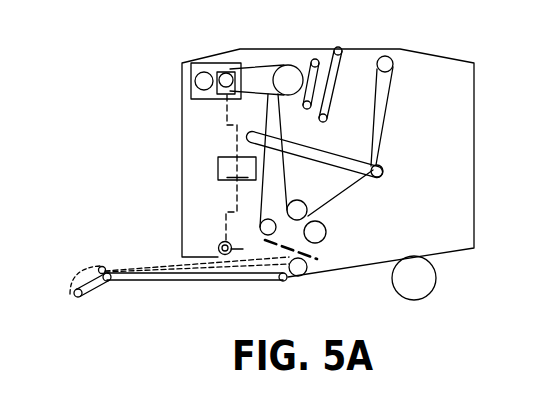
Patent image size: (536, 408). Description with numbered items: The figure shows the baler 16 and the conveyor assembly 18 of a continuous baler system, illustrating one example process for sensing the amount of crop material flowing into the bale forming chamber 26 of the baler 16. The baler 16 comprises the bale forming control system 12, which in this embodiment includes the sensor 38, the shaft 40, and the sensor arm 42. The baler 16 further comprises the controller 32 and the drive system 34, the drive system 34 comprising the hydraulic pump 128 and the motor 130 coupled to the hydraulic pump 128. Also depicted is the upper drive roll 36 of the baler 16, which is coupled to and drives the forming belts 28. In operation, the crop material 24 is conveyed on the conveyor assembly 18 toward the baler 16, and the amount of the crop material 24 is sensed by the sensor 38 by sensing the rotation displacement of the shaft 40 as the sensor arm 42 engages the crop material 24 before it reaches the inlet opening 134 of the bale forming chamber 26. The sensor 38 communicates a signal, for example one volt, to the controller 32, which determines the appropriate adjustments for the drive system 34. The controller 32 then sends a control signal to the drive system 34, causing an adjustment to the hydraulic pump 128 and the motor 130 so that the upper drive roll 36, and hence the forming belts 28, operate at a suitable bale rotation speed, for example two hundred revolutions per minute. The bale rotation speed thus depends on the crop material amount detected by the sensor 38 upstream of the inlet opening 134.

The bale forming control system 12 is at (299, 164).
The baler 16 is at (474, 107).
The conveyor assembly 18 is at (152, 265).
The crop material 24 is at (130, 272).
The bale forming chamber 26 is at (423, 172).
The forming belts 28 is at (282, 167).
The controller 32 is at (237, 168).
The drive system 34 is at (191, 78).
The upper drive roll 36 is at (285, 65).
The sensor 38 is at (219, 246).
The shaft 40 is at (242, 249).
The sensor arm 42 is at (240, 250).
The hydraulic pump 128 is at (200, 73).
The motor 130 is at (227, 74).
The inlet opening 134 is at (317, 259).